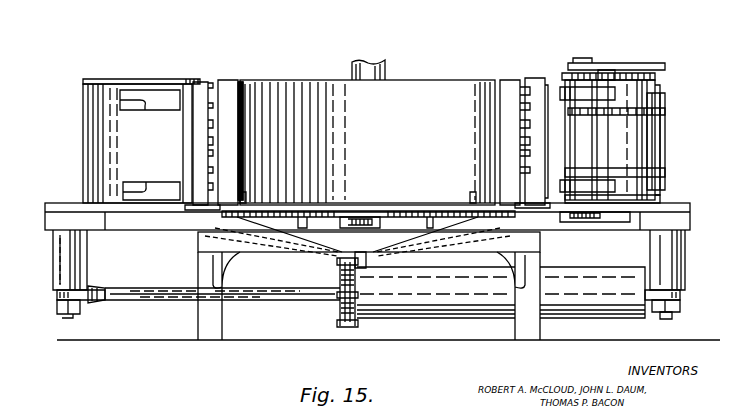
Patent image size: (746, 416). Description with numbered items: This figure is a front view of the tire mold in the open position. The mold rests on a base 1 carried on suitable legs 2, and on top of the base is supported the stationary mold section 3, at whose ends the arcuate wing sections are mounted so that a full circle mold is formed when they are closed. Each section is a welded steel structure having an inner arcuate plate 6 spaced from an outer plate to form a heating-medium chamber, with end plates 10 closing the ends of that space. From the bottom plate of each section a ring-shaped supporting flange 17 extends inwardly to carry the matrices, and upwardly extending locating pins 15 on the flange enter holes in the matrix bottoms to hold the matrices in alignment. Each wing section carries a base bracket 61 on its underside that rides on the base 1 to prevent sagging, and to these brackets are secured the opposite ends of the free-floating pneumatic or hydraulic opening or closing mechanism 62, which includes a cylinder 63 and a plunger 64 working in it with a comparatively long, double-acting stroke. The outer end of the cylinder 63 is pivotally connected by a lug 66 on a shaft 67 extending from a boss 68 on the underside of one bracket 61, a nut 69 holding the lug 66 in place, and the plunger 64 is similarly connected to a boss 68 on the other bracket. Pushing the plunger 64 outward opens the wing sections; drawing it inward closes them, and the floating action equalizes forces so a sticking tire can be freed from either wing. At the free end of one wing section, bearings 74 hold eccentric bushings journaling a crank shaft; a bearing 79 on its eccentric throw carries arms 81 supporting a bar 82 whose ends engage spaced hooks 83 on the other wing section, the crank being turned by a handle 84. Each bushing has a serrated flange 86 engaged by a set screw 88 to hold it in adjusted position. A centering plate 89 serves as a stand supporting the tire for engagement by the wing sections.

The base 1 is at (203, 243).
The legs 2 is at (212, 335).
The stationary mold section 3 is at (433, 88).
The inner arcuate plate 6 is at (465, 80).
The end plates 10 is at (189, 80).
The locating pins 15 is at (243, 197).
The supporting flange 17 is at (366, 208).
The base bracket 61 is at (52, 213).
The mold opening or closing mechanism 62 is at (328, 311).
The cylinder 63 is at (465, 322).
The plunger 64 is at (262, 300).
The lug 66 is at (58, 293).
The shaft 67 is at (668, 319).
The boss 68 is at (62, 253).
The nut 69 is at (680, 305).
The bearings 74 is at (565, 90).
The bearing 79 is at (600, 132).
The arms 81 is at (662, 173).
The bar 82 is at (666, 150).
The hooks 83 is at (143, 93).
The handle 84 is at (648, 63).
The flange 86 is at (573, 82).
The set screw 88 is at (606, 72).
The centering plate 89 is at (406, 213).